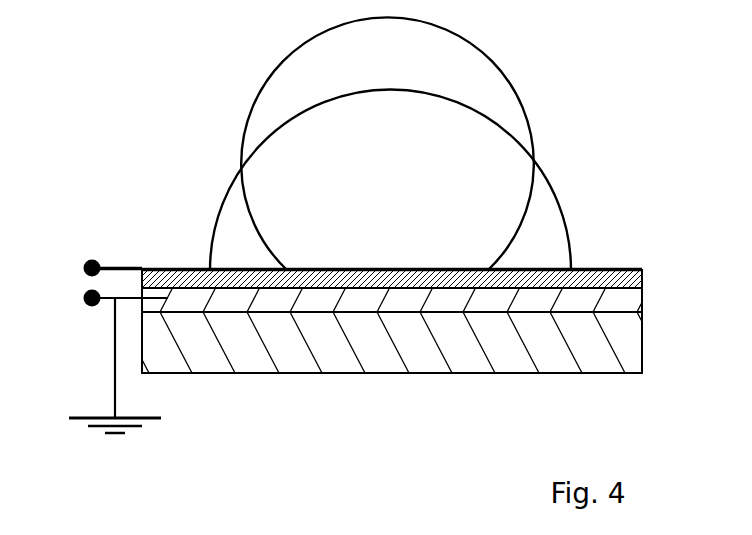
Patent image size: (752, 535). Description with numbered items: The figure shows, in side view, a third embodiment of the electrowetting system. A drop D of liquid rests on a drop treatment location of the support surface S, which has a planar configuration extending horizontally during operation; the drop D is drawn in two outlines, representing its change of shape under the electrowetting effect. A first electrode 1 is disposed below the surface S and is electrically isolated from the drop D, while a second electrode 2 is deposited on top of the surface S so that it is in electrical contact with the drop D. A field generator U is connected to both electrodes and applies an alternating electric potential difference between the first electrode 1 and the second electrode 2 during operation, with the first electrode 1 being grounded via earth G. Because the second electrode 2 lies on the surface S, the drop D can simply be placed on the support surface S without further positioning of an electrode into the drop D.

The first electrode 1 is at (245, 298).
The second electrode 2 is at (160, 268).
The drop D is at (514, 93).
The support surface S is at (611, 262).
The field generator U is at (109, 283).
The earth G is at (82, 417).